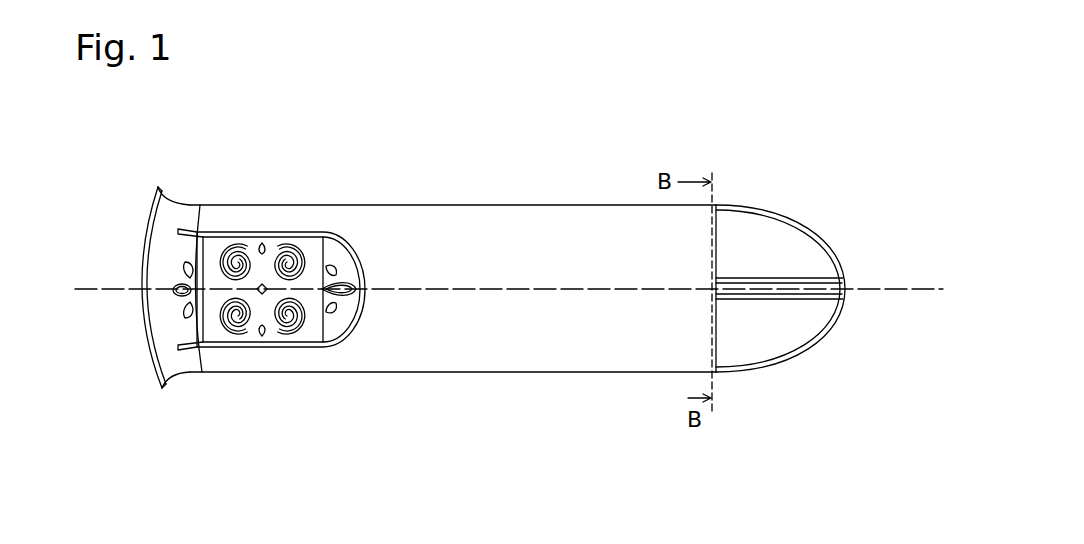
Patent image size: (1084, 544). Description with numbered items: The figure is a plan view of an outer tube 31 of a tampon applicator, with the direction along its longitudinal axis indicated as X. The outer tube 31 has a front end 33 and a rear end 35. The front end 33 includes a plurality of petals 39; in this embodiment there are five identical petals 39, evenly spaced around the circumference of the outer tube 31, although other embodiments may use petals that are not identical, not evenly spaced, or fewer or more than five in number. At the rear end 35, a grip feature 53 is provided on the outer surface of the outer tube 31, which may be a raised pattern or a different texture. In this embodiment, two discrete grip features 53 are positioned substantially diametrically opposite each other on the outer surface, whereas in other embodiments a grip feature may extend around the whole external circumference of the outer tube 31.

The outer tube 31 is at (553, 358).
The front end 33 is at (817, 227).
The rear end 35 is at (160, 335).
The petals 39 is at (793, 330).
The grip feature 53 is at (218, 330).
The longitudinal axis direction X is at (451, 304).